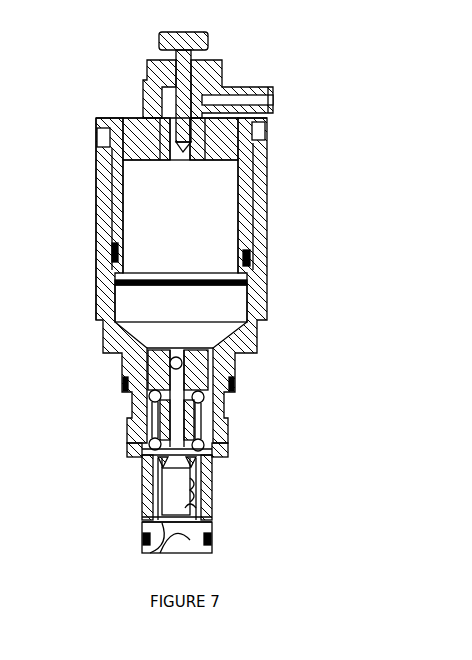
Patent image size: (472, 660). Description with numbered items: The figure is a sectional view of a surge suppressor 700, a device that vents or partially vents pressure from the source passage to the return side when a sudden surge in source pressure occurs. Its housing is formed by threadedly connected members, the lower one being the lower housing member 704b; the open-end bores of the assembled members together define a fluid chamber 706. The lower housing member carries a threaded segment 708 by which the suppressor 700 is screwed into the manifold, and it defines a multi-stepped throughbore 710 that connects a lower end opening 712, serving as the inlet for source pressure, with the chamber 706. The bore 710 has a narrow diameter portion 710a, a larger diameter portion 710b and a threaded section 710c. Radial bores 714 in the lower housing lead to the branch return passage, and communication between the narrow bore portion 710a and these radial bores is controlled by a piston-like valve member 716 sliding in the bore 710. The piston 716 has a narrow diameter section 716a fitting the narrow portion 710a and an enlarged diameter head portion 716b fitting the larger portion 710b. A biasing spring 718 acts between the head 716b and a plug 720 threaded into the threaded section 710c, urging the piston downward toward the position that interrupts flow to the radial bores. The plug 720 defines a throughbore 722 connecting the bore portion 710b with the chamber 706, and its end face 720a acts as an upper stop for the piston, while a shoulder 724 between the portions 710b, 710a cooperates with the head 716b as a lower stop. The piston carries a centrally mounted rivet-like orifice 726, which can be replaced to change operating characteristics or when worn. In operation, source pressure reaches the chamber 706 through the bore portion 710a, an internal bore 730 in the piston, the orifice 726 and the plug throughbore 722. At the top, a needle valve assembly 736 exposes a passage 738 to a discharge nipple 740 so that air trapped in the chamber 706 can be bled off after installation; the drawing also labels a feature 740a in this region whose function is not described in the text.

The surge suppressor 700 is at (74, 84).
The needle valve assembly 736 is at (205, 64).
The discharge nipple 740 is at (268, 89).
The port passage 740a is at (256, 153).
The passage 738 is at (179, 148).
The fluid chamber 706 is at (203, 236).
The lower housing member 704b is at (250, 258).
The threaded section 710c is at (150, 350).
The throughbore 722 is at (125, 379).
The plug 720 is at (197, 368).
The biasing spring 718 is at (203, 395).
The threaded segment 708 is at (230, 427).
The larger diameter portion 710b is at (130, 447).
The end face 720a is at (213, 445).
The enlarged diameter head portion 716b is at (203, 466).
The shoulder 724 is at (155, 468).
The orifice 726 is at (170, 489).
The radial bores 714 is at (152, 506).
The piston-like valve member 716 is at (210, 490).
The narrow diameter section 716a is at (190, 508).
The internal bore 730 is at (180, 522).
The lower end opening 712 is at (212, 552).
The narrow diameter portion 710a is at (152, 557).
The multi-stepped throughbore 710 is at (158, 548).